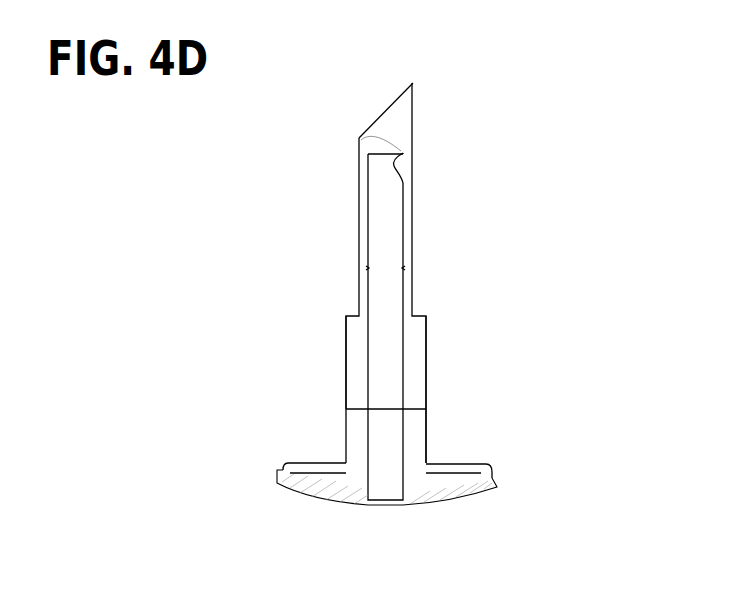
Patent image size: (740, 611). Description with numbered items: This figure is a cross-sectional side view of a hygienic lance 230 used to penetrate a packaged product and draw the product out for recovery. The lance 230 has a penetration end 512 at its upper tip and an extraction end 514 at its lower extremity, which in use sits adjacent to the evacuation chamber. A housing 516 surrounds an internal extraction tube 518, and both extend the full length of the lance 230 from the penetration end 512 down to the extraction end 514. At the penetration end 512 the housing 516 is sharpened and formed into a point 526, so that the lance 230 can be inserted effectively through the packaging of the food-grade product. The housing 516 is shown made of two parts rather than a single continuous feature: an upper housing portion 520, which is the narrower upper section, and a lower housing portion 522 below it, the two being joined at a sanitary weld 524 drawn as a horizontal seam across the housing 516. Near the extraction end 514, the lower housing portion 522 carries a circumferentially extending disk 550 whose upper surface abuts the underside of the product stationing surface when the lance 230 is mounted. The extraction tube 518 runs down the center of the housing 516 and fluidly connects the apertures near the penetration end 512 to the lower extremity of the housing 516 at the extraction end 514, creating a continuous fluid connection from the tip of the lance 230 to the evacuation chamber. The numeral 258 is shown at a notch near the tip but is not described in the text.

The hygienic lance 230 is at (563, 162).
The penetration end 512 is at (433, 82).
The point 526 is at (412, 86).
The notch 258 is at (415, 170).
The extraction tube 518 is at (377, 233).
The housing 516 is at (347, 364).
The upper housing portion 520 is at (433, 367).
The lower housing portion 522 is at (432, 437).
The sanitary weld 524 is at (346, 410).
The extraction end 514 is at (427, 542).
The circumferentially extending disk 550 is at (497, 490).